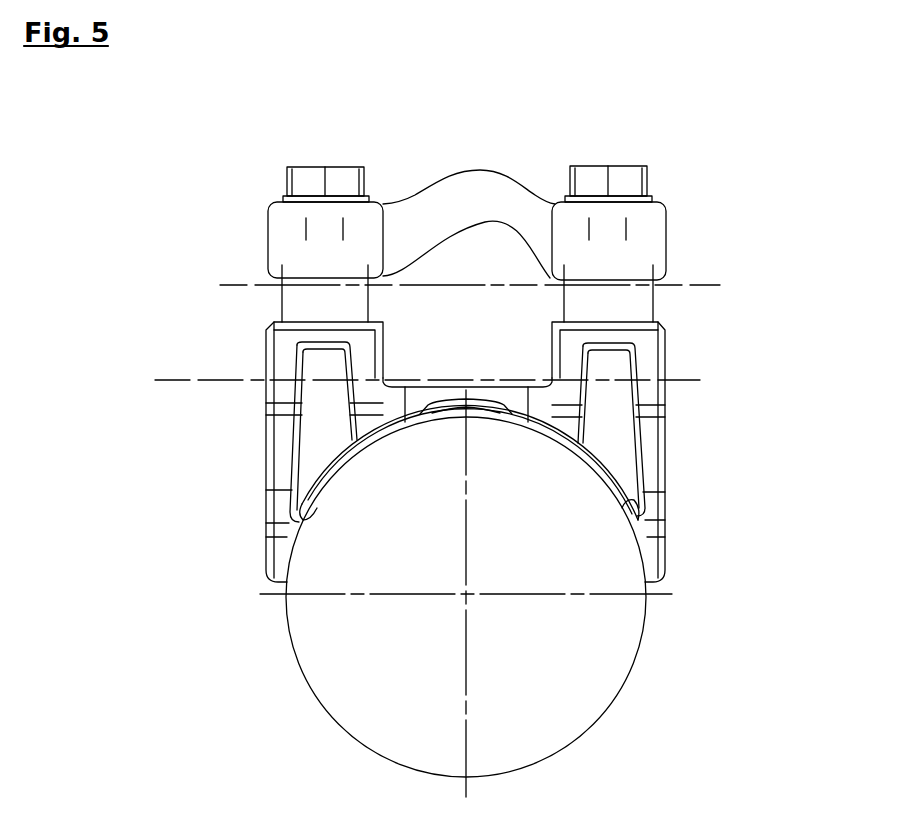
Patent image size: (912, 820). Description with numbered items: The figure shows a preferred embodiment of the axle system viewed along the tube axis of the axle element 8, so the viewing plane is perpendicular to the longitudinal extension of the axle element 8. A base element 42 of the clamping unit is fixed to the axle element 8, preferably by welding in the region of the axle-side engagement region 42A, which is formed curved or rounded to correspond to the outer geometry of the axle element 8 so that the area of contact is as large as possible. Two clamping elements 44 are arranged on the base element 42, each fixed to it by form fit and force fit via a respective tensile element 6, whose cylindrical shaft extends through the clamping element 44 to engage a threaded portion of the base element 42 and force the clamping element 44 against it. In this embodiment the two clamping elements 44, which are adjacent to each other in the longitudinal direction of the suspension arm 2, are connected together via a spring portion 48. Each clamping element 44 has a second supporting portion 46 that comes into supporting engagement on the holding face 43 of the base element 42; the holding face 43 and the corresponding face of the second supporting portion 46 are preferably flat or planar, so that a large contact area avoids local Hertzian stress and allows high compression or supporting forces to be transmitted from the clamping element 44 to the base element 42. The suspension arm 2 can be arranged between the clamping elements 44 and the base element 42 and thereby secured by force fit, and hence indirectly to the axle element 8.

The suspension arm 2 is at (226, 382).
The tensile element 6 is at (308, 186).
The axle element 8 is at (592, 680).
The base element 42 is at (645, 364).
The axle-side engagement region 42A is at (335, 468).
The holding face 43 is at (655, 318).
The clamping element 44 is at (652, 235).
The second supporting portion 46 is at (628, 308).
The spring portion 48 is at (505, 186).